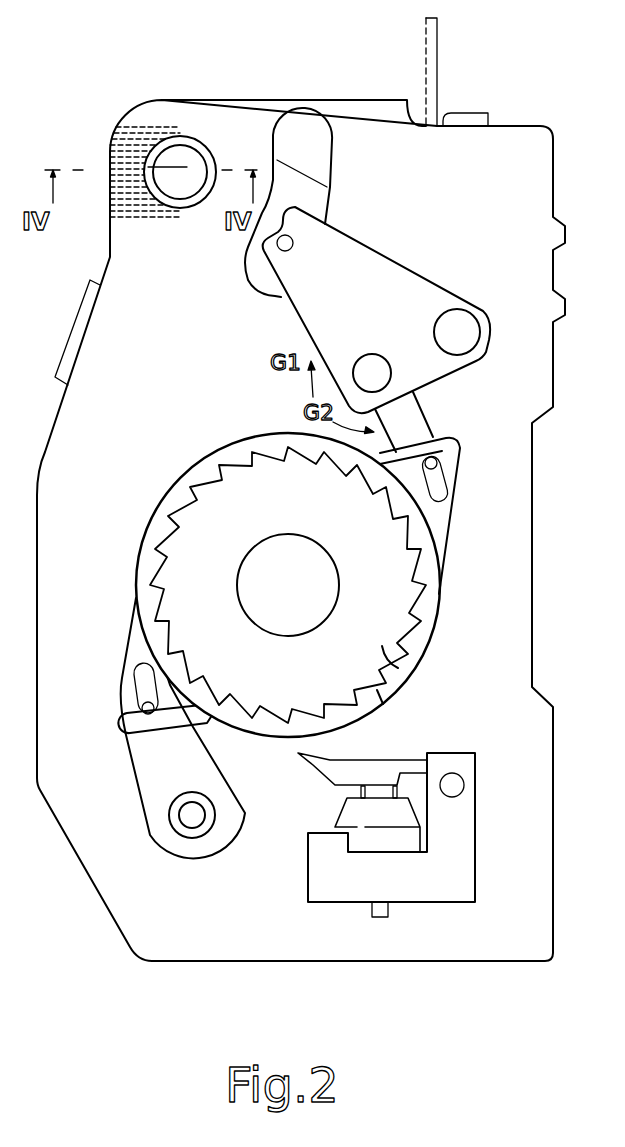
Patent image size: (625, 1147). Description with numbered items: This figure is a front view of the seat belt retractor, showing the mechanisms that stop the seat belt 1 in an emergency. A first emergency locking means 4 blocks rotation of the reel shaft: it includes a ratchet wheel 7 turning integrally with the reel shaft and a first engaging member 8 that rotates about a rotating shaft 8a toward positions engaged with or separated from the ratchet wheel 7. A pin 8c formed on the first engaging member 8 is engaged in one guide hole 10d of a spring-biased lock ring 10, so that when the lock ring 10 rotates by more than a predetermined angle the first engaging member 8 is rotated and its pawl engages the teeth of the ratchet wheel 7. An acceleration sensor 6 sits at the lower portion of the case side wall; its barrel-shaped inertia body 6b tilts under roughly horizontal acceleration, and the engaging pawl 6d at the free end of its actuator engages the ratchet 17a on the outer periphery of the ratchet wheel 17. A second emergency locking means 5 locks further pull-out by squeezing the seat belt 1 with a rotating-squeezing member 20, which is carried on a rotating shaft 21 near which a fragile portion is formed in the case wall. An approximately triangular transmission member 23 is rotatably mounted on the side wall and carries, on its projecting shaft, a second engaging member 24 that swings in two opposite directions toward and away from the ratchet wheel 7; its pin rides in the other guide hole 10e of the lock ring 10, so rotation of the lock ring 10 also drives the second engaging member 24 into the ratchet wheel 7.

The seat belt 1 is at (432, 40).
The first emergency locking means 4 is at (477, 516).
The second emergency locking means 5 is at (247, 314).
The acceleration sensor 6 is at (382, 835).
The inertia body 6b is at (335, 823).
The engaging pawl 6d is at (312, 758).
The ratchet wheel 7 is at (120, 143).
The first engaging member 8 is at (152, 744).
The rotating shaft 8a is at (187, 817).
The pin 8c is at (143, 710).
The lock ring 10 is at (430, 607).
The guide hole 10d is at (136, 680).
The guide hole 10e is at (450, 487).
The ratchet wheel 17 is at (422, 694).
The ratchet 17a is at (384, 700).
The rotating-squeezing member 20 is at (313, 182).
The rotating shaft 21 is at (188, 148).
The transmission member 23 is at (400, 262).
The second engaging member 24 is at (419, 407).